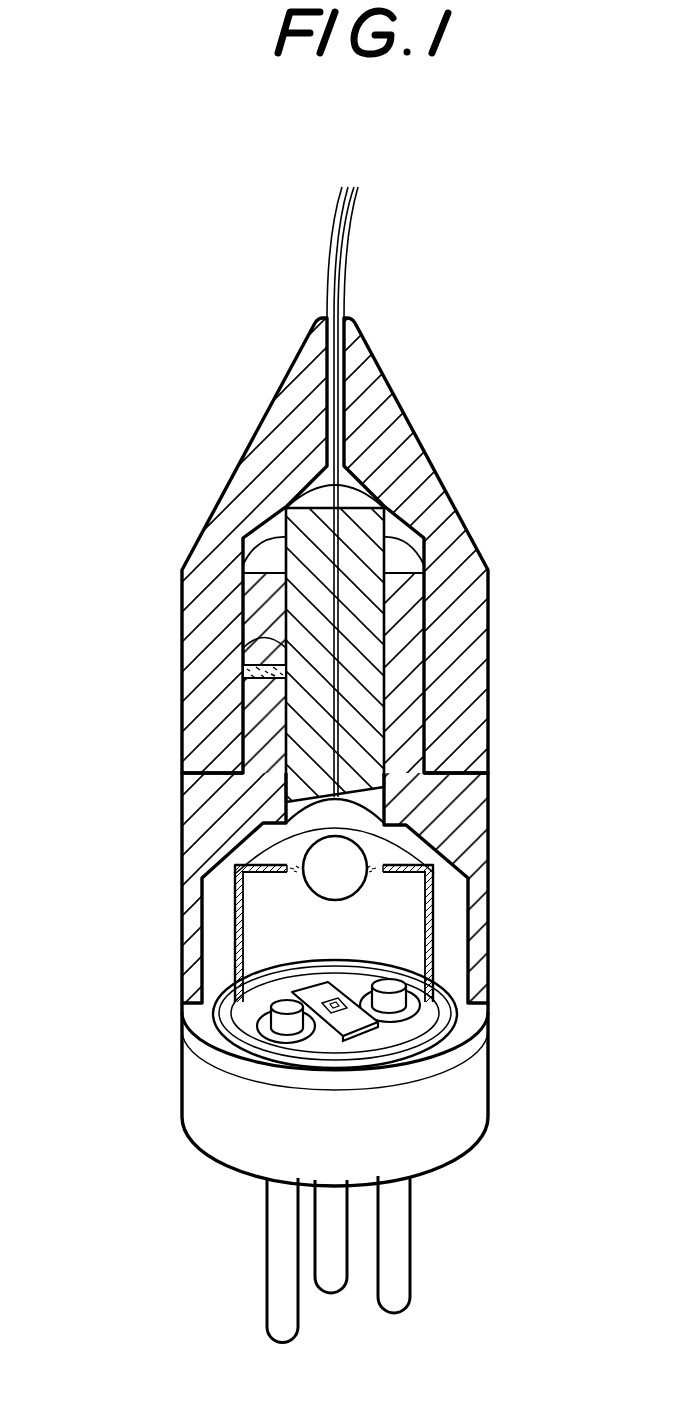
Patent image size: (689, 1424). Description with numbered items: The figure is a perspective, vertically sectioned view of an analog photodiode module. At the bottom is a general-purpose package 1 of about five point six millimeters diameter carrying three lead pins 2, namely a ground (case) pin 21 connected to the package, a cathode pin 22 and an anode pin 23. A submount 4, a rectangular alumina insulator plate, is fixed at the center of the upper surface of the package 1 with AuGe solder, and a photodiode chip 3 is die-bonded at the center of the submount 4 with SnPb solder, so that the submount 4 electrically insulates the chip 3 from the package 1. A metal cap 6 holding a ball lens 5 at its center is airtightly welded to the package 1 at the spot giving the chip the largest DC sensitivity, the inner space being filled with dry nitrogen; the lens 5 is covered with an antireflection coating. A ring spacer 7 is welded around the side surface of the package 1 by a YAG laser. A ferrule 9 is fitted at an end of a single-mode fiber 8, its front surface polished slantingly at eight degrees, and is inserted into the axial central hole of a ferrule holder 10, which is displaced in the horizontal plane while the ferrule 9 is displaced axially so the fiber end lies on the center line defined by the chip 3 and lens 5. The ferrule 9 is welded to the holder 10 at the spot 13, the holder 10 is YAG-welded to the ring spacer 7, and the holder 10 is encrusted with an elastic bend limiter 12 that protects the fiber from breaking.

The package 1 is at (438, 1008).
The lead pins 2 is at (394, 1279).
The photodiode chip 3 is at (287, 1015).
The submount 4 is at (372, 1030).
The ball lens 5 is at (317, 877).
The metal cap 6 is at (398, 855).
The ring spacer 7 is at (203, 1100).
The single-mode fiber 8 is at (343, 573).
The ferrule 9 is at (367, 628).
The ferrule holder 10 is at (463, 810).
The bend limiter 12 is at (472, 650).
The welding spot 13 is at (243, 647).
The ground (case) pin 21 is at (333, 1288).
The cathode pin 22 is at (283, 1328).
The anode pin 23 is at (427, 1244).